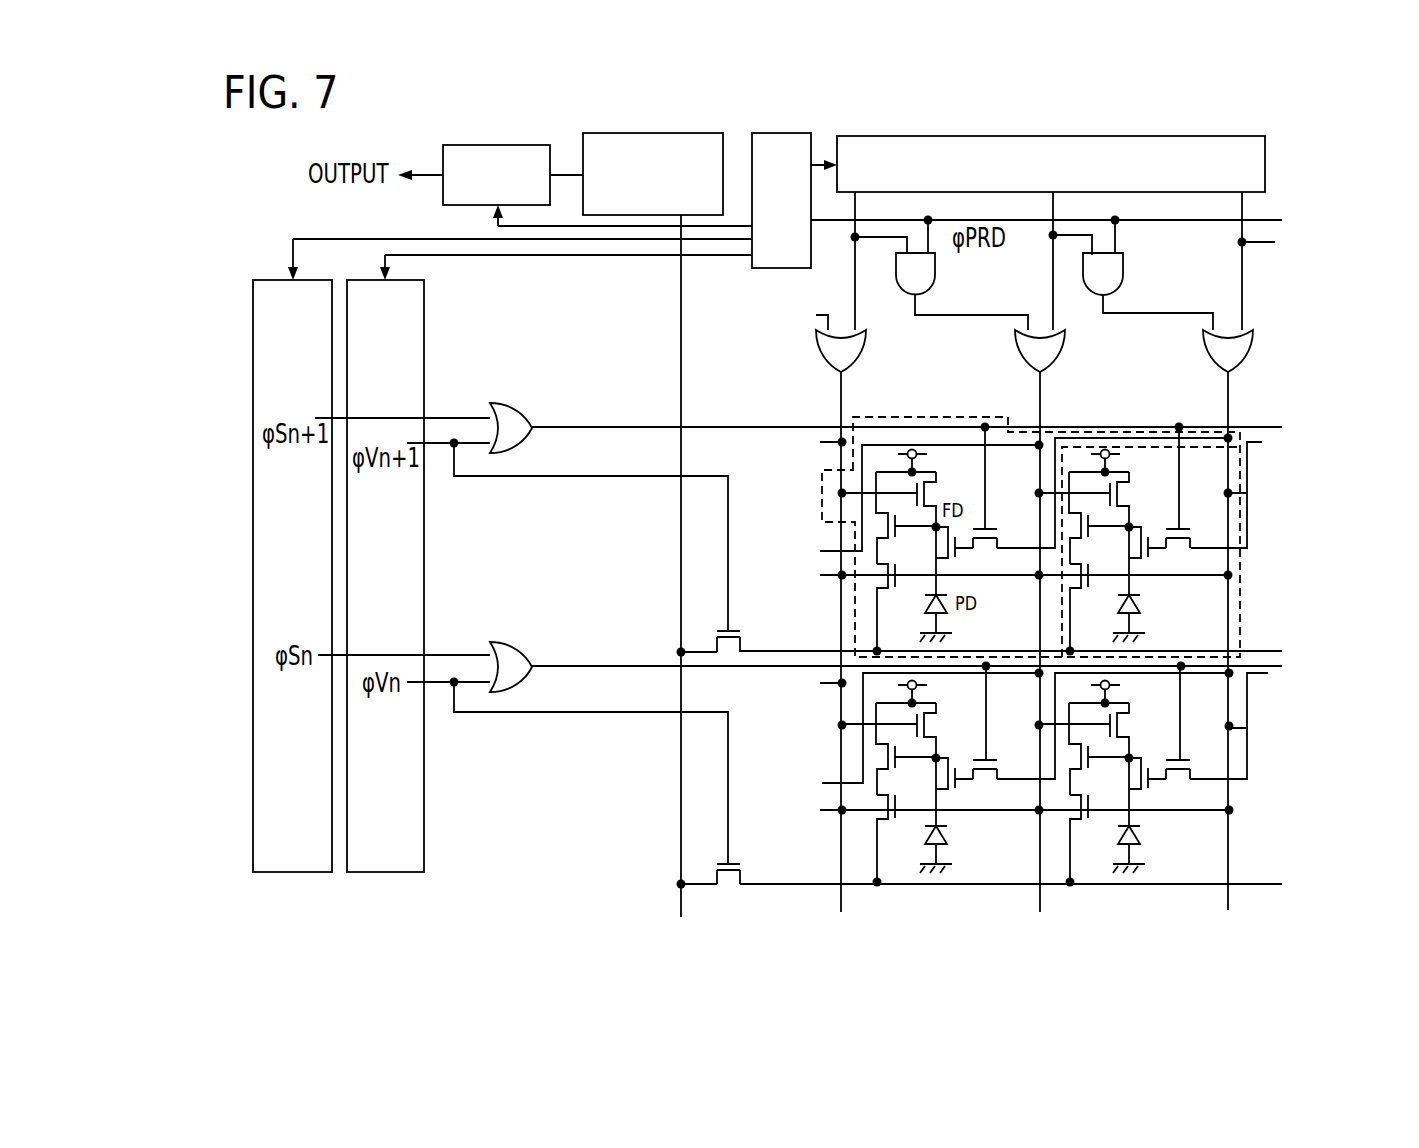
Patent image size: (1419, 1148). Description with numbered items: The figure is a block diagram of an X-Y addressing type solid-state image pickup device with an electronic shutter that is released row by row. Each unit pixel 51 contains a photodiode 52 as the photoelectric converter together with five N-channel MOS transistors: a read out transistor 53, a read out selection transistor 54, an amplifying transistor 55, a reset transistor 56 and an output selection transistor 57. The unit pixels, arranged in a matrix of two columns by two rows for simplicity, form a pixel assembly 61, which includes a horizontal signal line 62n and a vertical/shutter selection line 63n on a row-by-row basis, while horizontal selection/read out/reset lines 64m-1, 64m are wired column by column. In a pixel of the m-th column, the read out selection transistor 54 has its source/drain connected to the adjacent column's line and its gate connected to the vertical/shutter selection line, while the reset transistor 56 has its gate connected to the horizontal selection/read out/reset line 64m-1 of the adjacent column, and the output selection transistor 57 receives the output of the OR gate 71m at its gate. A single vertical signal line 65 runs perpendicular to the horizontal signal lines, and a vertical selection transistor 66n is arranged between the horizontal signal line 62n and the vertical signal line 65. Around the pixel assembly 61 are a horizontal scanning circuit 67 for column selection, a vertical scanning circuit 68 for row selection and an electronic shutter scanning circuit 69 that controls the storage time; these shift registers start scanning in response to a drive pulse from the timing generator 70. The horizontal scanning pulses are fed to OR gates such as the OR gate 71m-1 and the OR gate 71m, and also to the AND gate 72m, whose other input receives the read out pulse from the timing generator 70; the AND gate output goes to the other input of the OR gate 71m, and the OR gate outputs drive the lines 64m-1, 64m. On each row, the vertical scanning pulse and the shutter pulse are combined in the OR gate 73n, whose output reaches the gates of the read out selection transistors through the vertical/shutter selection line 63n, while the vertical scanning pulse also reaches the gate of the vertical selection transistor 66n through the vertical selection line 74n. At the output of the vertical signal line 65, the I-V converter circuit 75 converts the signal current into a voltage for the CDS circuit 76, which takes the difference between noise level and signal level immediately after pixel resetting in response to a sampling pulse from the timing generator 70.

The unit pixel 51 is at (931, 417).
The photodiode 52 is at (947, 610).
The read out transistor 53 is at (938, 563).
The read out selection transistor 54 is at (995, 540).
The amplifying transistor 55 is at (877, 543).
The reset transistor 56 is at (933, 490).
The output selection transistor 57 is at (886, 588).
The pixel assembly 61 is at (1272, 534).
The horizontal signal line 62n is at (1270, 884).
The vertical/shutter selection line 63n is at (1282, 666).
The horizontal selection/read out/reset line 64m-1 is at (841, 404).
The horizontal selection/read out/reset line 64m is at (1040, 398).
The vertical signal line 65 is at (681, 855).
The vertical selection transistor 66n is at (745, 876).
The horizontal scanning circuit 67 is at (1265, 168).
The vertical scanning circuit 68 is at (398, 873).
The electronic shutter scanning circuit 69 is at (301, 873).
The timing generator 70 is at (775, 270).
The OR gate 71m-1 is at (816, 348).
The OR gate 71m is at (1066, 345).
The AND gate 72m is at (935, 272).
The OR gate 73n is at (517, 641).
The vertical selection line 74n is at (566, 713).
The I-V converter circuit 75 is at (583, 145).
The CDS circuit 76 is at (443, 196).